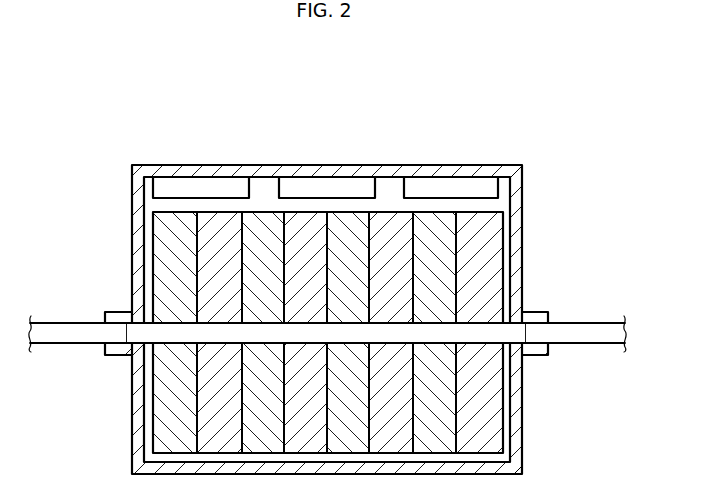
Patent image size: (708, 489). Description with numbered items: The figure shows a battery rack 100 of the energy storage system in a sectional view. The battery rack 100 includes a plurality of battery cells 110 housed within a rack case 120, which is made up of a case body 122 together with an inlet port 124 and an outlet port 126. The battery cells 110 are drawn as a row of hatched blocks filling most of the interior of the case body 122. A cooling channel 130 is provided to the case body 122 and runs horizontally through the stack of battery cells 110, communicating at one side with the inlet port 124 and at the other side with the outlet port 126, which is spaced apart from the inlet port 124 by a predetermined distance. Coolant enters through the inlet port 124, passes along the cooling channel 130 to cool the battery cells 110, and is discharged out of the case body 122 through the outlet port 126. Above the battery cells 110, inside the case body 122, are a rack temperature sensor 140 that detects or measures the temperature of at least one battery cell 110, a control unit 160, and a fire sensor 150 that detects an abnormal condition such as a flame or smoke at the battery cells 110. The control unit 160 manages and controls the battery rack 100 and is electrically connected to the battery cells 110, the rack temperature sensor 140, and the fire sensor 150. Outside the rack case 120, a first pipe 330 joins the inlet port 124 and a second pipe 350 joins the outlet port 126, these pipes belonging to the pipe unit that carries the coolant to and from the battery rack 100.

The battery rack 100 is at (144, 128).
The battery cell 110 is at (483, 243).
The rack case 120 is at (530, 160).
The case body 122 is at (515, 438).
The inlet port 124 is at (120, 312).
The outlet port 126 is at (540, 312).
The cooling channel 130 is at (181, 335).
The rack temperature sensor 140 is at (202, 188).
The fire sensor 150 is at (453, 188).
The control unit 160 is at (326, 188).
The first pipe 330 is at (62, 323).
The second pipe 350 is at (590, 323).